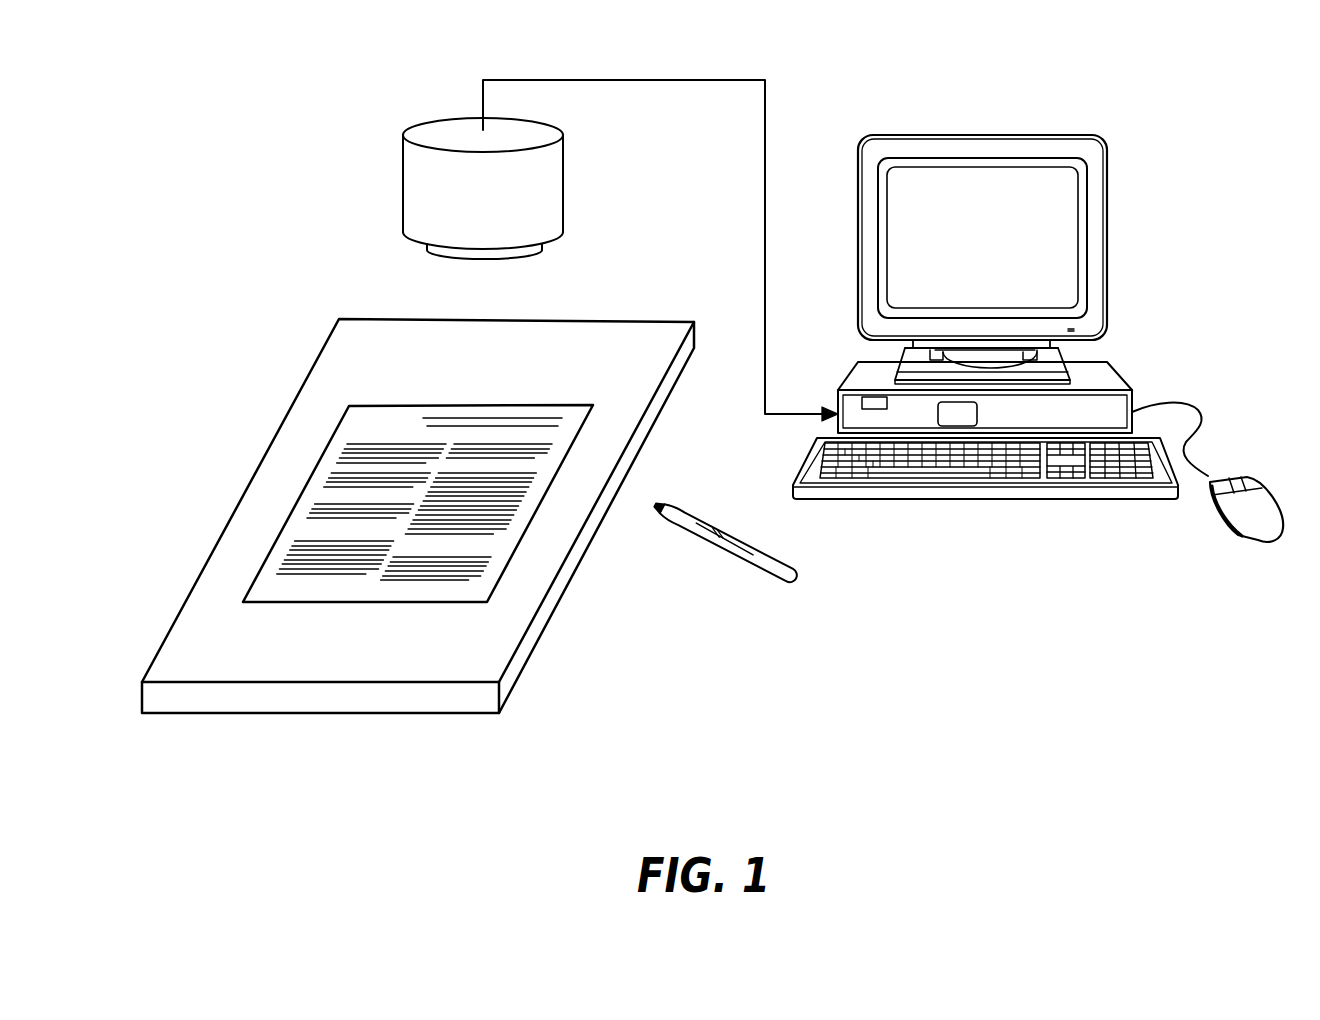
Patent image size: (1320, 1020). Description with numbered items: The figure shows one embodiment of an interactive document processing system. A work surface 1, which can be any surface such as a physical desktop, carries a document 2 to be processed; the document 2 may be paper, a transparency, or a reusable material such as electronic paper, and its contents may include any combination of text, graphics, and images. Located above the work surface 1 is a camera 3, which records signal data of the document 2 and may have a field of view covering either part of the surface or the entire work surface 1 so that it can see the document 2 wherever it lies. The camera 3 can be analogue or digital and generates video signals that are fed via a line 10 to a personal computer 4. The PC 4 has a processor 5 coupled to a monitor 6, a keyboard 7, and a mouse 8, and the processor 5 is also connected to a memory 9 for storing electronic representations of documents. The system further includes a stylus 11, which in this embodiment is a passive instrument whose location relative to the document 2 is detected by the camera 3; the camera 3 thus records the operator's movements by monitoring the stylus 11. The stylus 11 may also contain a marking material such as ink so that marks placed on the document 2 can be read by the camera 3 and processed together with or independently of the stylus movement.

The work surface 1 is at (614, 334).
The document 2 is at (390, 403).
The camera 3 is at (420, 180).
The personal computer 4 is at (1015, 302).
The processor 5 is at (977, 405).
The monitor 6 is at (973, 133).
The keyboard 7 is at (810, 453).
The mouse 8 is at (1257, 480).
The memory 9 is at (870, 396).
The line 10 is at (645, 80).
The stylus 11 is at (767, 560).